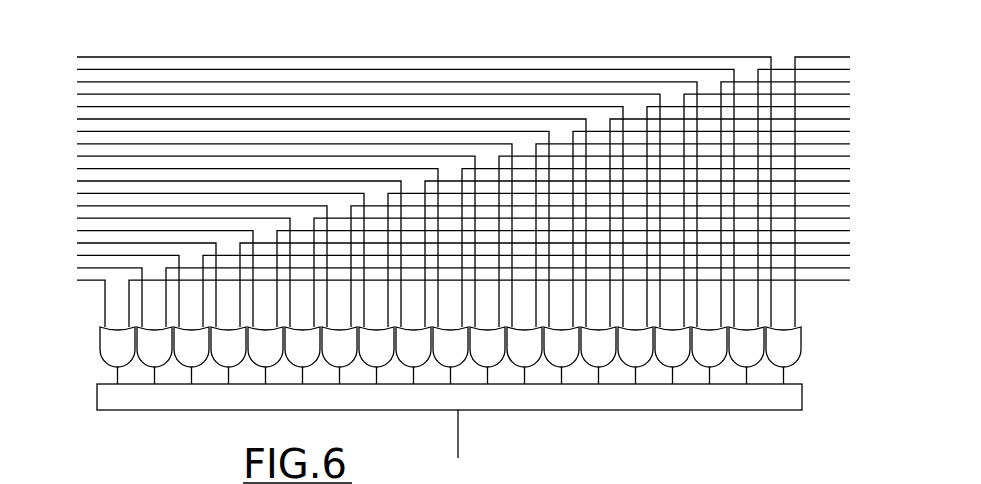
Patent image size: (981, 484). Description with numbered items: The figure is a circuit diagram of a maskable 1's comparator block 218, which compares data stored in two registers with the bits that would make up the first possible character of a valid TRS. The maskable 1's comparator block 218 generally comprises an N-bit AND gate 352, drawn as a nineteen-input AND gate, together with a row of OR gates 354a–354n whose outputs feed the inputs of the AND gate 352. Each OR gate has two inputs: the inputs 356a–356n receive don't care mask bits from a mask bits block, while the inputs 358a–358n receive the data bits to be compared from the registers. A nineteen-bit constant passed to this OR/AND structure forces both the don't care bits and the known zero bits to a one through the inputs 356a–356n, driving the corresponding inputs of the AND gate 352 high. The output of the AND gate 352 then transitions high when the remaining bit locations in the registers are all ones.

The maskable 1's comparator block 218 is at (73, 418).
The N-bit AND gate 352 is at (198, 411).
The OR gate 354a is at (100, 344).
The OR gate 354n is at (800, 343).
The input 356a is at (101, 329).
The input 356n is at (771, 326).
The input 358a is at (129, 326).
The input 358n is at (801, 329).